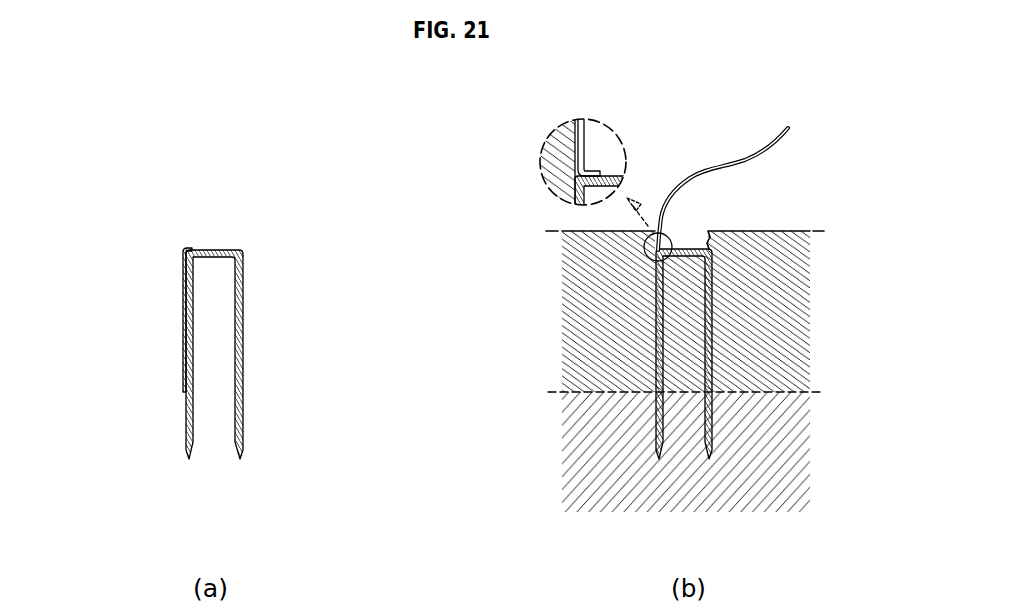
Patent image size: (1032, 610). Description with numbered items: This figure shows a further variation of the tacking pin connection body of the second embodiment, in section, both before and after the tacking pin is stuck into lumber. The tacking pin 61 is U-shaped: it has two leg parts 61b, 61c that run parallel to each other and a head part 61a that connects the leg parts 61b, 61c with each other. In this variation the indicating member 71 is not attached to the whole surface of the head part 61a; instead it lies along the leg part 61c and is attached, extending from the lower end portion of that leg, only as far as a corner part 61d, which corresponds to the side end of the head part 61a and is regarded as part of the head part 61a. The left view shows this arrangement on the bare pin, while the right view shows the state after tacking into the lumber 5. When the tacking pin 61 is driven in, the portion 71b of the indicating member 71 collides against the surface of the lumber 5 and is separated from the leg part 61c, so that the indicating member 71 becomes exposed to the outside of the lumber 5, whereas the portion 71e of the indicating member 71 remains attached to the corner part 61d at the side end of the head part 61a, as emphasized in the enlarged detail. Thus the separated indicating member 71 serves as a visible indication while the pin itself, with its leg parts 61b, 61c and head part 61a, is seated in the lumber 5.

The lumber 5 is at (787, 313).
The tacking pin 61 is at (340, 272).
The head part 61a is at (205, 258).
The leg part 61b is at (240, 376).
The leg part 61c is at (193, 408).
The corner part 61d is at (192, 256).
The indicating member 71 is at (75, 235).
The portion of the indicating member 71b is at (185, 325).
The portion of the indicating member 71e is at (186, 250).